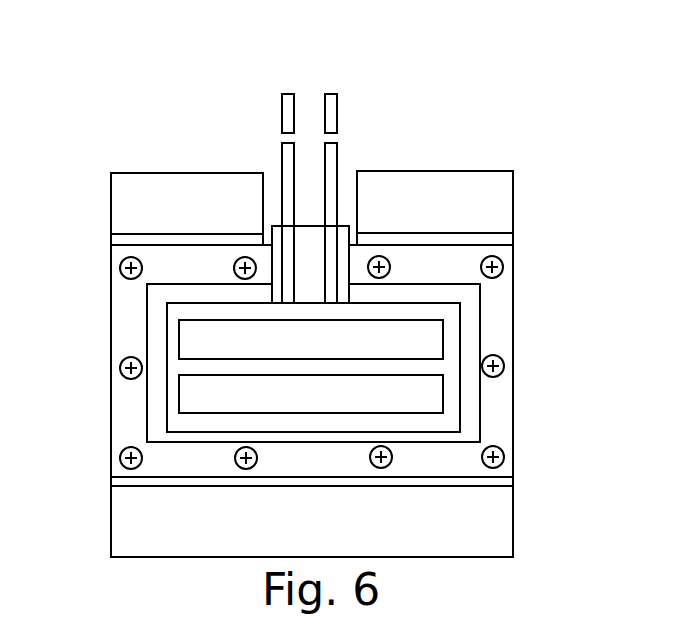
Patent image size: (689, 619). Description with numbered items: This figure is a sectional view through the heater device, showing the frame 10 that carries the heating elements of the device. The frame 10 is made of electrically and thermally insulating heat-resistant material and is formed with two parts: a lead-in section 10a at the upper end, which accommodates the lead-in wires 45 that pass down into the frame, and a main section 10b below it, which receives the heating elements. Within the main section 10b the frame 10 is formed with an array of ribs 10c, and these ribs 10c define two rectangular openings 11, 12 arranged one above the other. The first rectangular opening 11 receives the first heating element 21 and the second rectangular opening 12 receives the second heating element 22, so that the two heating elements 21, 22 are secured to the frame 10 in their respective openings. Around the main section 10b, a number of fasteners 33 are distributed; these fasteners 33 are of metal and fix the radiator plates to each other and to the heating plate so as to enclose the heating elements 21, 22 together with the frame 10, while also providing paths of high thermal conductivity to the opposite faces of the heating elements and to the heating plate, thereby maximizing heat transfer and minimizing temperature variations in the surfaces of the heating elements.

The frame 10 is at (134, 173).
The lead-in section 10a is at (348, 170).
The main section 10b is at (513, 305).
The ribs 10c is at (197, 303).
The rectangular opening 11 is at (197, 322).
The rectangular opening 12 is at (197, 378).
The heating element 21 is at (327, 352).
The heating element 22 is at (327, 407).
The fasteners 33 is at (505, 462).
The lead-in wires 45 is at (290, 93).